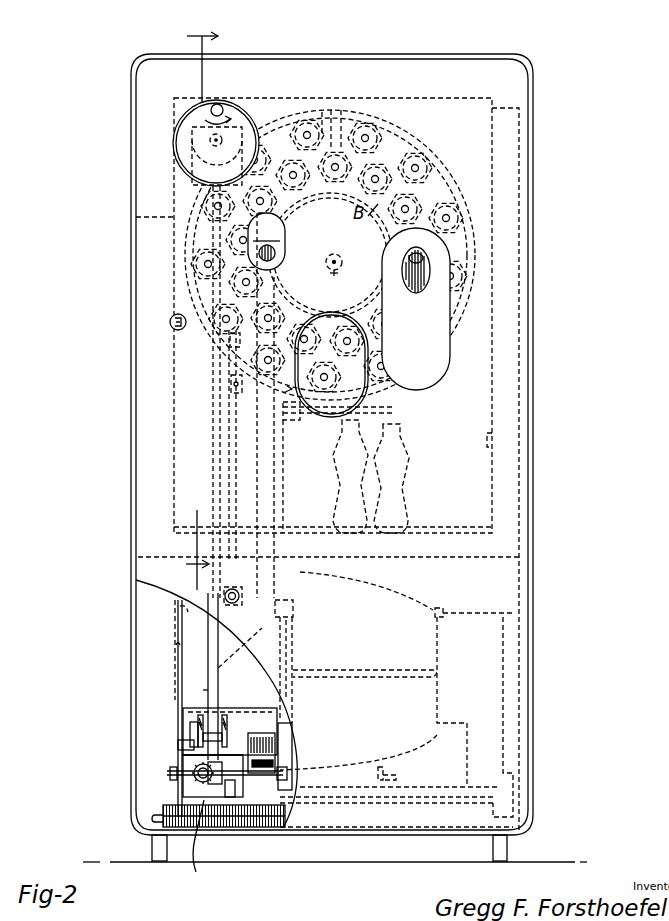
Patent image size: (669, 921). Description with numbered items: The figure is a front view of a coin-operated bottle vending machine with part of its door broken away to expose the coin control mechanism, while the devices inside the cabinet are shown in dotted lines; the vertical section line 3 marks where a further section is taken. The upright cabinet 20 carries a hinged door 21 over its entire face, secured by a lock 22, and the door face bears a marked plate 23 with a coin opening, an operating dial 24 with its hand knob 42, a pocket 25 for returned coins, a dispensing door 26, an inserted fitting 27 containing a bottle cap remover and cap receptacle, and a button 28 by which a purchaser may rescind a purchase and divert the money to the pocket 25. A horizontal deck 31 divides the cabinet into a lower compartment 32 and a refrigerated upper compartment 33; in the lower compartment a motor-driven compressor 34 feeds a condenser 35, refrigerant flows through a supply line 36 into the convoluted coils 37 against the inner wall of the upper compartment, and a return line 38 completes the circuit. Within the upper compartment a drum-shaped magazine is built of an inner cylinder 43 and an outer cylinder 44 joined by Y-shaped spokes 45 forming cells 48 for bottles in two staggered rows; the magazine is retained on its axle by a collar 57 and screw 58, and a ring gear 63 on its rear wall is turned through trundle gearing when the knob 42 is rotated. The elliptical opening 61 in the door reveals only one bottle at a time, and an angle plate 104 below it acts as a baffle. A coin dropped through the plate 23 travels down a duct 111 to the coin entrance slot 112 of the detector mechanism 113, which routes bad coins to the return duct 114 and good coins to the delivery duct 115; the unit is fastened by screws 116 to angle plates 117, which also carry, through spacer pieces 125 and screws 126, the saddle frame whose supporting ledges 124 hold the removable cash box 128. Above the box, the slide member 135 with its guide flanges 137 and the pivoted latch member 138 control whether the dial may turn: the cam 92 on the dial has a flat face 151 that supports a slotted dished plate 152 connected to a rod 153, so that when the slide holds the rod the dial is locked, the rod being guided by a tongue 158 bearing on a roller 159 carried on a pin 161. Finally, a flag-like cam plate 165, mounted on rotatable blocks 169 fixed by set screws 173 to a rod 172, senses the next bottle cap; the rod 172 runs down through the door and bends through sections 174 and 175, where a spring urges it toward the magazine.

The section line 3- 3 is at (202, 303).
The cabinet 20 is at (132, 348).
The hinged door 21 is at (137, 372).
The lock 22 is at (171, 318).
The marked plate 23 is at (275, 256).
The operating dial 24 is at (177, 127).
The pocket 25 is at (277, 752).
The dispensing door 26 is at (318, 415).
The inserted fitting 27 is at (435, 352).
The button 28 is at (241, 590).
The horizontal deck 31 is at (452, 533).
The lower compartment 32 is at (150, 672).
The upper compartment 33 is at (462, 433).
The motor-driven compressor 34 is at (440, 697).
The condenser 35 is at (163, 812).
The supply line 36 is at (520, 668).
The convoluted coils 37 is at (497, 440).
The return line 38 is at (462, 612).
The hand knob 42 is at (219, 104).
The inner cylinder 43 is at (339, 198).
The outer cylinder 44 is at (418, 135).
The spokes 45 is at (422, 151).
The cells 48 is at (366, 100).
The collar 57 is at (343, 260).
The screw 58 is at (338, 270).
The elliptical opening 61 is at (313, 322).
The ring gear 63 is at (308, 108).
The cam 92 is at (192, 165).
The angle plate 104 is at (378, 410).
The duct 111 is at (276, 480).
The coin entrance slot 112 is at (290, 630).
The detector mechanism 113 is at (180, 637).
The return duct 114 is at (283, 700).
The delivery duct 115 is at (203, 690).
The screws 116 is at (177, 617).
The angle plates 117 is at (178, 645).
The supporting ledges 124 is at (180, 753).
The spacer pieces 125 is at (180, 745).
The screws 126 is at (180, 740).
The cash box 128 is at (208, 849).
The slide member 135 is at (226, 745).
The guide flanges 137 is at (196, 735).
The latch member 138 is at (245, 742).
The flat face 151 is at (190, 139).
The slotted dished plate 152 is at (176, 156).
The rod 153 is at (136, 216).
The tongue 158 is at (215, 793).
The roller 159 is at (198, 772).
The pin 161 is at (200, 786).
The cam plate 165 is at (233, 380).
The rotatable blocks 169 is at (207, 350).
The rod 172 is at (233, 462).
The set screws 173 is at (233, 340).
The right-angled rod section 174 is at (134, 584).
The inward downward rod section 175 is at (201, 676).